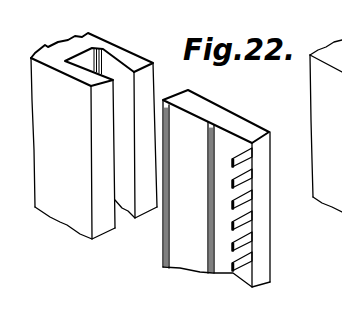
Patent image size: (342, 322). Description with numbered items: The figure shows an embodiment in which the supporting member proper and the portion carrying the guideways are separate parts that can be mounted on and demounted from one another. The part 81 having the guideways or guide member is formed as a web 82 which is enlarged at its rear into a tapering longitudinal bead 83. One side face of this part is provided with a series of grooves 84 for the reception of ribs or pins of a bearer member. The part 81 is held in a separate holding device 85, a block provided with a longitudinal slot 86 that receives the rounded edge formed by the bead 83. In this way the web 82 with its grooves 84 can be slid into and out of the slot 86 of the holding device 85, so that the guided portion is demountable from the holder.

The part having the guideways or guide member 81 is at (247, 238).
The web 82 is at (247, 127).
The tapering longitudinal bead 83 is at (205, 103).
The grooves 84 is at (246, 185).
The holding device 85 is at (88, 38).
The longitudinal slot 86 is at (112, 62).